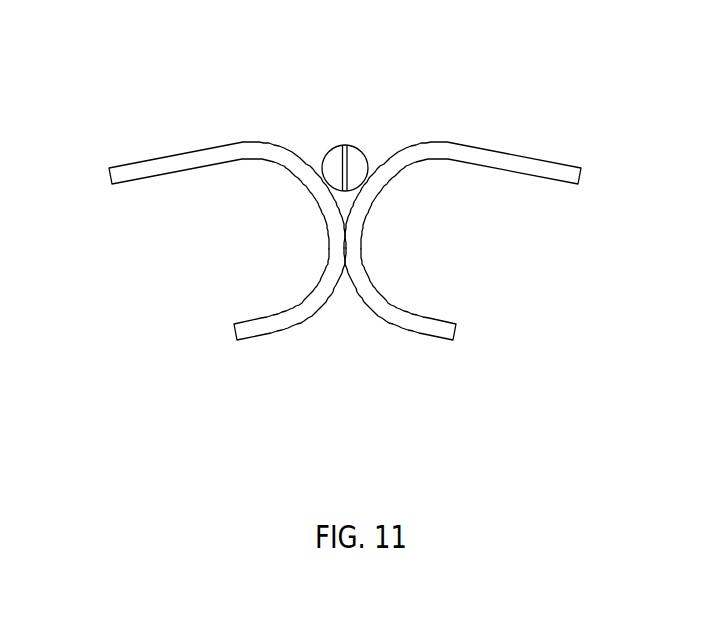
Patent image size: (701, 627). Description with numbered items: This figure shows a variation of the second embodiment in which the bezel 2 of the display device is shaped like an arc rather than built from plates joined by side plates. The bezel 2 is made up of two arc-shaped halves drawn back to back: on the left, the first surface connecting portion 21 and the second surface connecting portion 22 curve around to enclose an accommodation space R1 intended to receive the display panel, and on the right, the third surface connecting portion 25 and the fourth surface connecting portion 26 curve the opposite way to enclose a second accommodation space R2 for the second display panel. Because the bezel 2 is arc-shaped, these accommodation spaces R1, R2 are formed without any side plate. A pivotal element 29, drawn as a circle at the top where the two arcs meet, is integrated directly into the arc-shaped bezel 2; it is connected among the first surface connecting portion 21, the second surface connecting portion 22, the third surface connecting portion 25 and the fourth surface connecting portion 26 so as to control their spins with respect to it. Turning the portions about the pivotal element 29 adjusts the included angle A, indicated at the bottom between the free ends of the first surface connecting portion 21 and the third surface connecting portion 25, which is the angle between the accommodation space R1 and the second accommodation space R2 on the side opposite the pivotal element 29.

The bezel 2 is at (68, 52).
The first surface connecting portion 21 is at (239, 342).
The second surface connecting portion 22 is at (157, 172).
The third surface connecting portion 25 is at (451, 342).
The fourth surface connecting portion 26 is at (520, 167).
The pivotal element 29 is at (360, 152).
The accommodation space R1 is at (213, 257).
The second accommodation space R2 is at (477, 257).
The included angle A is at (435, 342).